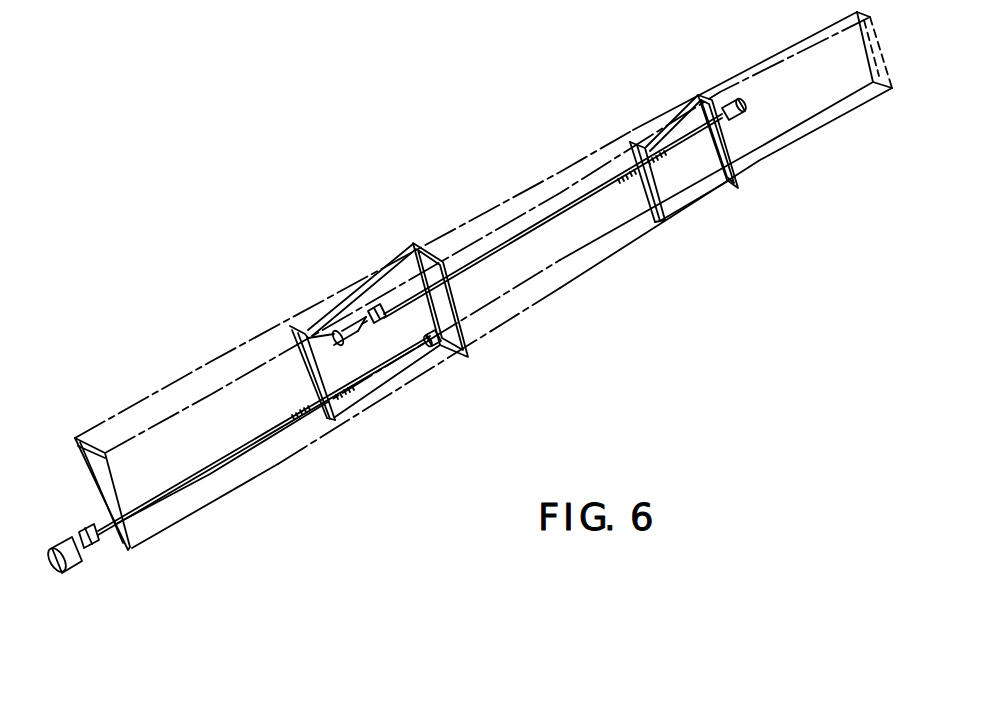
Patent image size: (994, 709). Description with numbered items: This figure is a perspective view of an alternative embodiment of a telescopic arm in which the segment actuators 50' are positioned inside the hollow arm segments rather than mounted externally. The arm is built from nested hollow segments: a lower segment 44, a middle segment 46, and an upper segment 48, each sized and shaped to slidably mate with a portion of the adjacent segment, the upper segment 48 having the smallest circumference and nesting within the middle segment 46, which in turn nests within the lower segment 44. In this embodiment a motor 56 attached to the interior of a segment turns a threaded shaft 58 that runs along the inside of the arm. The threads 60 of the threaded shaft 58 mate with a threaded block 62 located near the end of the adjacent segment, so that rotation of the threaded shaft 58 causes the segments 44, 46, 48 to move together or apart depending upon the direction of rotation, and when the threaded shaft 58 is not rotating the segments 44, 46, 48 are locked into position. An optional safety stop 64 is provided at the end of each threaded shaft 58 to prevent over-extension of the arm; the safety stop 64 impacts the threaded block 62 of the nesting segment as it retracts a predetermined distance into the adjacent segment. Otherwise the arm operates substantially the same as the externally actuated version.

The lower segment 44 is at (242, 488).
The middle segment 46 is at (537, 290).
The upper segment 48 is at (833, 107).
The segment actuator 50' is at (86, 591).
The motor 56 is at (60, 538).
The threaded shaft 58 is at (175, 492).
The threads 60 is at (348, 390).
The threaded block 62 is at (312, 385).
The safety stop 64 is at (436, 342).